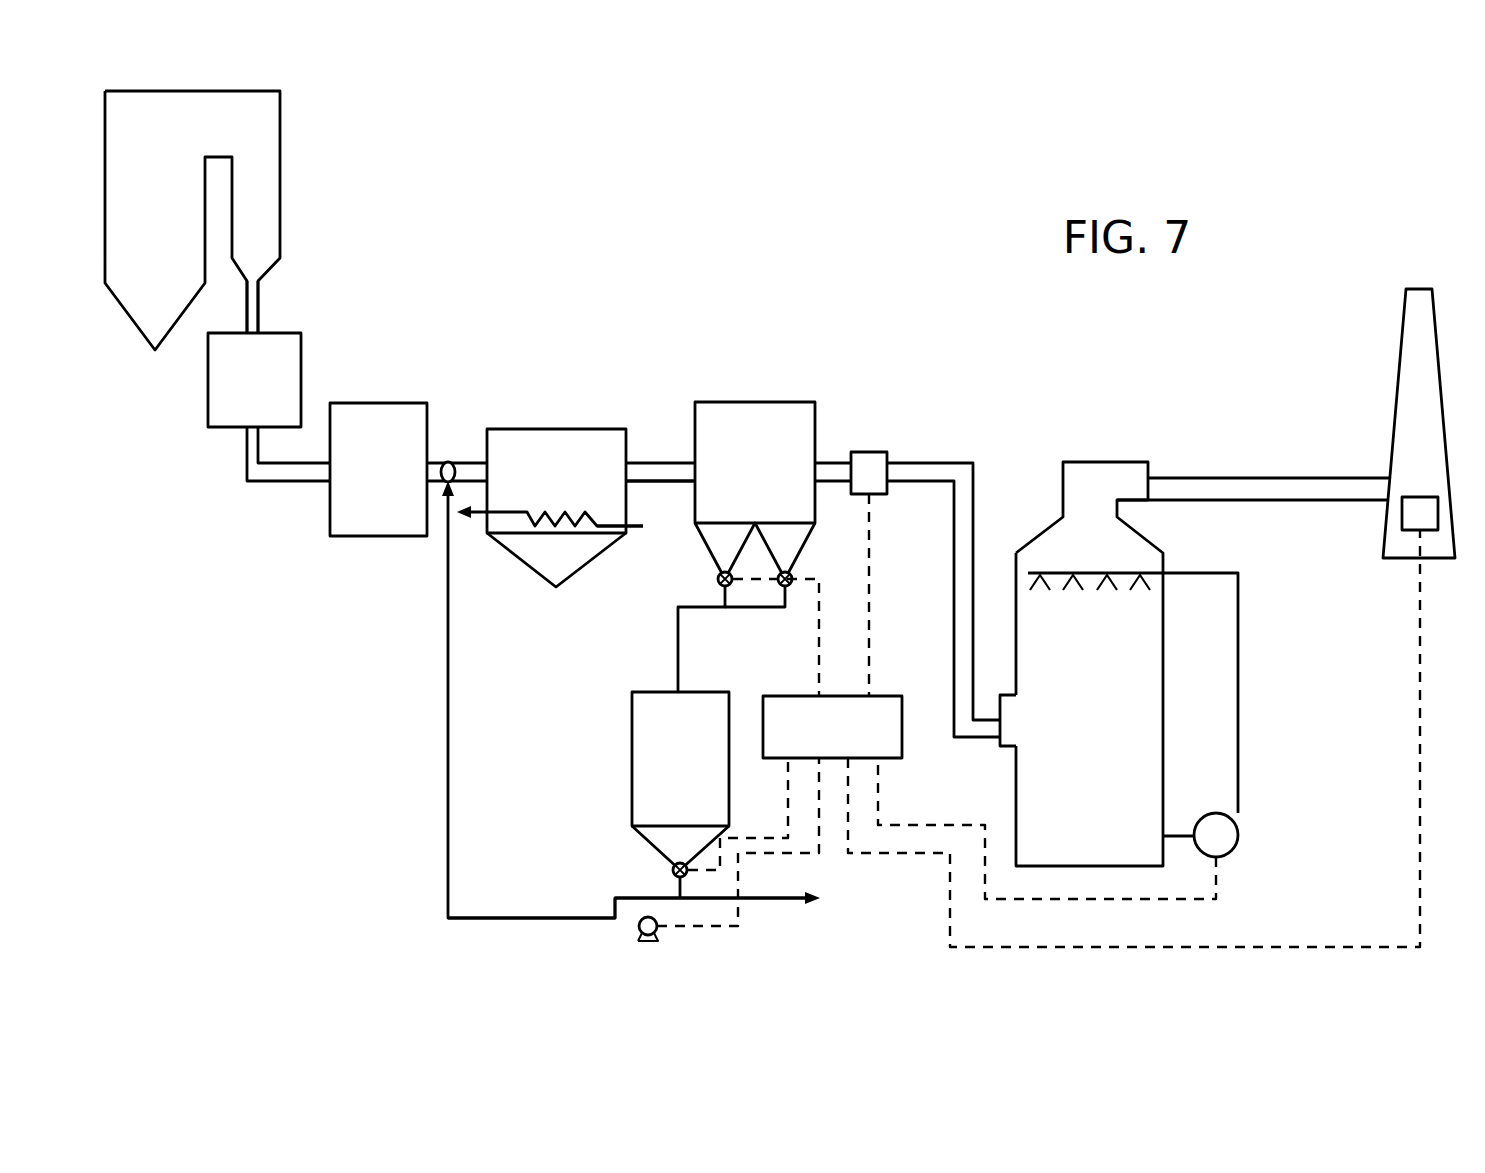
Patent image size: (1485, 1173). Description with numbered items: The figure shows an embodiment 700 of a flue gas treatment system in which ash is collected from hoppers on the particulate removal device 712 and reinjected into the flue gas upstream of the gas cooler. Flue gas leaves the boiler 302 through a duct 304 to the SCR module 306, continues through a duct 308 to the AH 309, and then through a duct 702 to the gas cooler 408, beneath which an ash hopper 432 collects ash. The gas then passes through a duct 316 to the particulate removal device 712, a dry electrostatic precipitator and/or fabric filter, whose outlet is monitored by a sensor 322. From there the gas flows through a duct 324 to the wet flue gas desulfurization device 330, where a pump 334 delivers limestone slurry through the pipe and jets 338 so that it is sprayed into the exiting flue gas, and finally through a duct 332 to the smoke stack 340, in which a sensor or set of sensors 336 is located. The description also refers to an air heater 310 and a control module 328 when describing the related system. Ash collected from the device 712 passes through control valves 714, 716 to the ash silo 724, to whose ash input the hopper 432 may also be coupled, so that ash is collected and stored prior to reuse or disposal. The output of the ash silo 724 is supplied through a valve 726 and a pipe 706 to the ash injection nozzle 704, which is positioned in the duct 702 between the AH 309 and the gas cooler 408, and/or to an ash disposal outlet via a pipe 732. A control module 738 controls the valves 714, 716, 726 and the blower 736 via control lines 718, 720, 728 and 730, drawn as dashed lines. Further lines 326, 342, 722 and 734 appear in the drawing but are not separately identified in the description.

The embodiment 700 is at (855, 202).
The boiler 302 is at (280, 198).
The duct 304 is at (258, 312).
The SCR module 306 is at (301, 362).
The duct 308 is at (258, 481).
The AH 309 is at (390, 403).
The ash injection nozzle 704 is at (448, 462).
The duct 702 is at (478, 463).
The gas cooler 408 is at (557, 429).
The ash hopper 432 is at (583, 568).
The cooling medium line 342 is at (482, 515).
The air heater 310 is at (643, 526).
The duct 316 is at (675, 481).
The pipe 706 is at (448, 648).
The particulate removal device 712 is at (755, 402).
The control valve 714 is at (716, 580).
The control valve 716 is at (792, 574).
The ash line 722 is at (737, 607).
The control line 718 is at (755, 583).
The control line 720 is at (818, 590).
The sensor 322 is at (868, 452).
The control line 326 is at (869, 590).
The duct 324 is at (940, 463).
The control module 328 is at (1000, 750).
The wet flue gas desulfurization device 330 is at (1100, 462).
The pipe and jets 338 is at (1048, 590).
The pump 334 is at (1238, 640).
The duct 332 is at (1215, 478).
The smoke stack 340 is at (1403, 320).
The sensor 336 is at (1402, 513).
The control module 738 is at (890, 696).
The ash silo 724 is at (632, 730).
The valve 726 is at (672, 868).
The control line 728 is at (703, 888).
The pipe 732 is at (785, 900).
The ash recycle line 734 is at (615, 905).
The blower 736 is at (645, 943).
The control line 730 is at (710, 926).